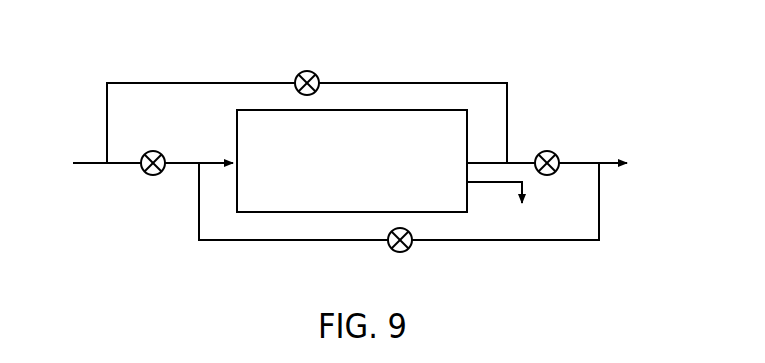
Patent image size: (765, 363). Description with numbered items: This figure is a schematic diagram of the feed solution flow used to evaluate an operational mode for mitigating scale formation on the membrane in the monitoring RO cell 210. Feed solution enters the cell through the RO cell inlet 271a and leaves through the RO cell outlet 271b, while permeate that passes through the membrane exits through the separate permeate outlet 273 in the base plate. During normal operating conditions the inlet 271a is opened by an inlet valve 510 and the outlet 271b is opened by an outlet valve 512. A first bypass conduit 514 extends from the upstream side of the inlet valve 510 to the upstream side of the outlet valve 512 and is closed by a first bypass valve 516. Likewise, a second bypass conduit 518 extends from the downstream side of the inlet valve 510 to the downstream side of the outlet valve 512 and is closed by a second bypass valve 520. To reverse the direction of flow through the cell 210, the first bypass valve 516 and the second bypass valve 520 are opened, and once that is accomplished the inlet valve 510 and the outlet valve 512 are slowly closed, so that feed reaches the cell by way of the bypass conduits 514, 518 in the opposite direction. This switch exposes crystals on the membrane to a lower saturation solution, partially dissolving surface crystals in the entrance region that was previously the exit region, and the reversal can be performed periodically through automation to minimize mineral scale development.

The monitoring RO cell 210 is at (453, 203).
The inlet 271a is at (213, 160).
The outlet 271b is at (486, 162).
The outlet 273 is at (472, 184).
The inlet valve 510 is at (144, 172).
The outlet valve 512 is at (556, 152).
The first bypass conduit 514 is at (430, 83).
The first bypass valve 516 is at (317, 75).
The second bypass conduit 518 is at (535, 240).
The second bypass valve 520 is at (410, 248).